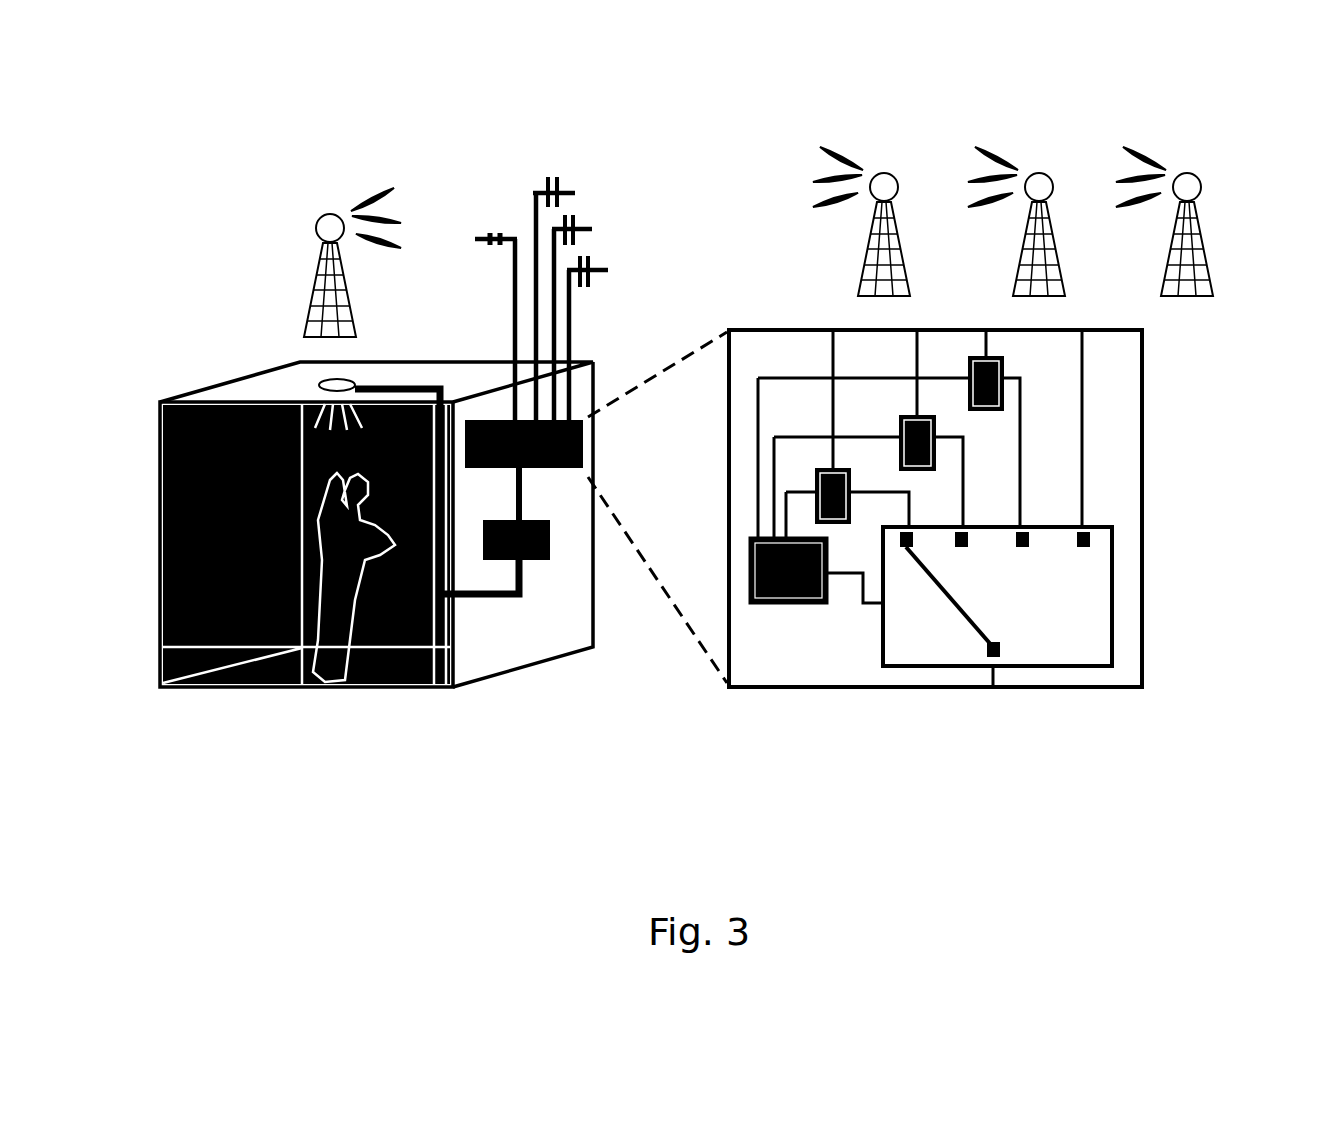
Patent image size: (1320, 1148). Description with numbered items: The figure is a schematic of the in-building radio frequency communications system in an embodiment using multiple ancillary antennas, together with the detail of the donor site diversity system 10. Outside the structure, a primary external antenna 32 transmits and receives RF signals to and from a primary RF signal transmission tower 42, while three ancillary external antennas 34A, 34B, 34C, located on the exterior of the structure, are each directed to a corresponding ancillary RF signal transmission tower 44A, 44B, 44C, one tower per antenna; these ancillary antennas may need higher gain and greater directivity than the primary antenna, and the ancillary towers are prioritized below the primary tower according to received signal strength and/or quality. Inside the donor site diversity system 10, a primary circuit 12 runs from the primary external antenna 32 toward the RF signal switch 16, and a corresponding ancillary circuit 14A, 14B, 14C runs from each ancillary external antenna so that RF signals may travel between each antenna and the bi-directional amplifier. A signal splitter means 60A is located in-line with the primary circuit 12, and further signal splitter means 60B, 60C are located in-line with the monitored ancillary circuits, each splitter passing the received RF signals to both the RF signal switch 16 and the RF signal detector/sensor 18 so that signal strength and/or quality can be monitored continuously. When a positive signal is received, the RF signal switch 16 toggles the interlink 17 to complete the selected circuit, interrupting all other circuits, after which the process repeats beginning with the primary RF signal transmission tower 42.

The donor site diversity system 10 is at (1065, 705).
The primary circuit 12 is at (828, 357).
The ancillary circuit 14A is at (967, 516).
The ancillary circuit 14B is at (1025, 480).
The ancillary circuit 14C is at (1087, 455).
The RF signal switch 16 is at (1114, 585).
The interlink 17 is at (938, 592).
The RF signal detector/sensor 18 is at (792, 607).
The primary external antenna 32 is at (492, 222).
The ancillary external antenna 34A is at (601, 187).
The ancillary external antenna 34B is at (616, 230).
The ancillary external antenna 34C is at (626, 265).
The primary RF signal transmission tower 42 is at (300, 275).
The ancillary RF signal transmission tower 44A is at (897, 153).
The ancillary RF signal transmission tower 44B is at (1040, 143).
The ancillary RF signal transmission tower 44C is at (1180, 137).
The signal splitter means 60A is at (812, 478).
The signal splitter means 60B is at (939, 423).
The signal splitter means 60C is at (1008, 367).